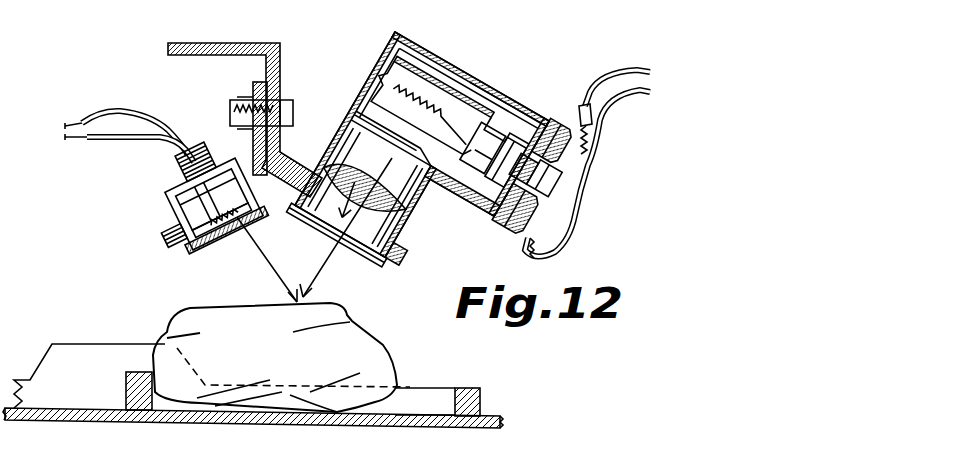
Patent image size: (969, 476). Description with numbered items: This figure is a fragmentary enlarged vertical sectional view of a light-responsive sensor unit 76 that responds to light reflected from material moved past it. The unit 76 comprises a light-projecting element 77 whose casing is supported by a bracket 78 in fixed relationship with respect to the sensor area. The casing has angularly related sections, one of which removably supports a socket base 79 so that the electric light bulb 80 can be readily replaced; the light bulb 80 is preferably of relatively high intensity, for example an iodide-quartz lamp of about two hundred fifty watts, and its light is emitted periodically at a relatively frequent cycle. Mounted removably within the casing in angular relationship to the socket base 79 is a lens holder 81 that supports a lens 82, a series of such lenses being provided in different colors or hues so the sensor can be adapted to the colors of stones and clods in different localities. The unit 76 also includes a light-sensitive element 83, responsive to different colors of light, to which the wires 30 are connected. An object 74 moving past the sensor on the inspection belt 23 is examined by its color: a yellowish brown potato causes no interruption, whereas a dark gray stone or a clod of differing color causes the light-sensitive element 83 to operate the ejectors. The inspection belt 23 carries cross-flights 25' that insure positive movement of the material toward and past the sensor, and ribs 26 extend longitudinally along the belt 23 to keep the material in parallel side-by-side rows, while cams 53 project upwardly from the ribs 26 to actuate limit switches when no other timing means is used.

The inspection belt 23 is at (413, 428).
The cross-flights 25' is at (323, 358).
The ribs 26 is at (430, 397).
The wires 30 is at (100, 147).
The cams 53 is at (75, 362).
The object 74 is at (378, 364).
The sensor unit 76 is at (519, 76).
The light-projecting element 77 is at (453, 83).
The bracket 78 is at (293, 178).
The socket base 79 is at (503, 230).
The electric light bulb 80 is at (493, 98).
The lens holder 81 is at (373, 243).
The lens 82 is at (405, 198).
The light-sensitive element 83 is at (170, 211).